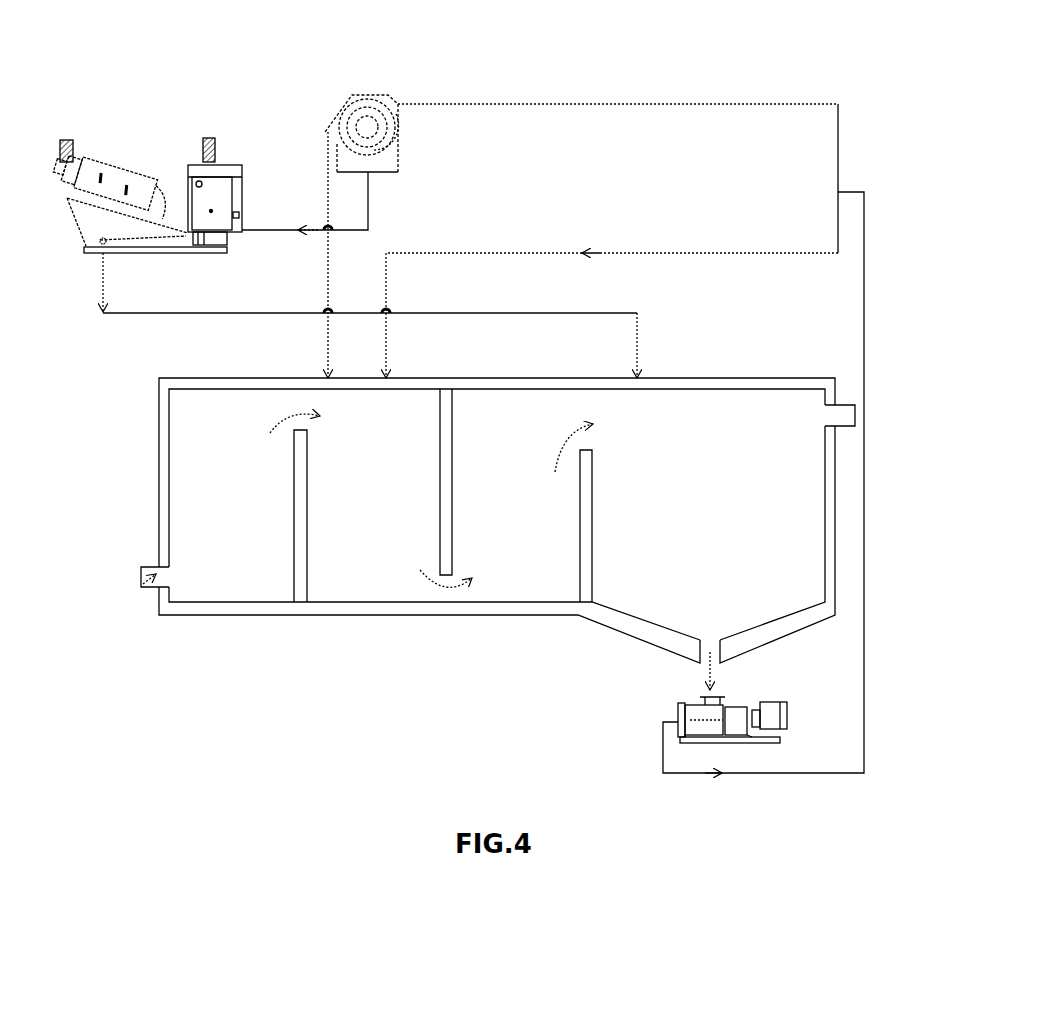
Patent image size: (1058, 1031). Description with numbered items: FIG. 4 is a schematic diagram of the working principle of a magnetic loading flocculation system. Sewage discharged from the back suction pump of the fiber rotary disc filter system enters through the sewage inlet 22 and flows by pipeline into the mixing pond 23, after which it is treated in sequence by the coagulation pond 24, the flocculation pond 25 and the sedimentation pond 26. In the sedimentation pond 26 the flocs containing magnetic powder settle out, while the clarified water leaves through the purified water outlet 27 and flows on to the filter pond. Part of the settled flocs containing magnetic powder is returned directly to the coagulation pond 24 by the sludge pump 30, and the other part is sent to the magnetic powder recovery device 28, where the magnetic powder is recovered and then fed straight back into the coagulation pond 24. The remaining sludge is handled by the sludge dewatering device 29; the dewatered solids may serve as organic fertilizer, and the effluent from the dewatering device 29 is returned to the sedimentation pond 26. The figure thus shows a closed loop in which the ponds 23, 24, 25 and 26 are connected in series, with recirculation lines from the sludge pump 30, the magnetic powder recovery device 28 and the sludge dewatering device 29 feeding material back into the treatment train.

The sewage inlet 22 is at (156, 578).
The mixing pond 23 is at (257, 579).
The coagulation pond 24 is at (392, 577).
The flocculation pond 25 is at (527, 577).
The sedimentation pond 26 is at (722, 509).
The purified water outlet 27 is at (842, 412).
The magnetic powder recovery device 28 is at (390, 80).
The sludge dewatering device 29 is at (114, 162).
The sludge pump 30 is at (676, 702).